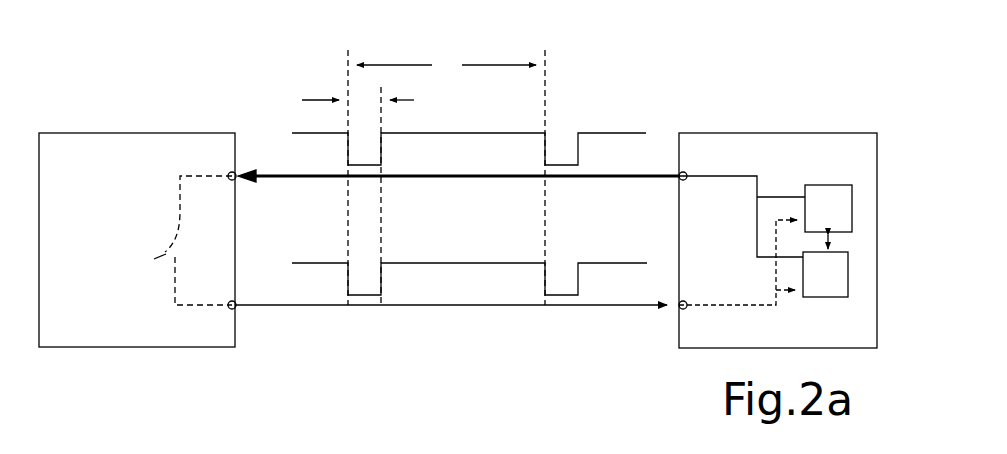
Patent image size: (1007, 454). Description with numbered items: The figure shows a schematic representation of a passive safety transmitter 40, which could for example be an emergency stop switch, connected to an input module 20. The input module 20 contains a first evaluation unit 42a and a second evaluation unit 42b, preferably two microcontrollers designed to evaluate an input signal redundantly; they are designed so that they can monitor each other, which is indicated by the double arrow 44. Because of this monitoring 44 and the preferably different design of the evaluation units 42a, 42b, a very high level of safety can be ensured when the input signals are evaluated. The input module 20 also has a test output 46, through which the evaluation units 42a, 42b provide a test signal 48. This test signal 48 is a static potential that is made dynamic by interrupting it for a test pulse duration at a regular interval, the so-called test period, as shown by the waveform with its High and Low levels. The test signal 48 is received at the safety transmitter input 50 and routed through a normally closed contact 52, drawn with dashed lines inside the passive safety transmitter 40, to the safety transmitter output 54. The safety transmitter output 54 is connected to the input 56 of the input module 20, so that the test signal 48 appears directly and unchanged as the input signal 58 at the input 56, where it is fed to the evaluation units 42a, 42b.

The passive safety transmitter 40 is at (97, 150).
The normally closed contact 52 is at (195, 178).
The input module 20 is at (763, 142).
The first evaluation unit 42a is at (823, 192).
The second evaluation unit 42b is at (833, 283).
The double arrow 44 is at (830, 240).
The safety transmitter input 50 is at (236, 176).
The test output 46 is at (680, 176).
The safety transmitter output 54 is at (236, 308).
The input 56 is at (675, 312).
The test signal 48 is at (596, 133).
The input signal 58 is at (455, 263).